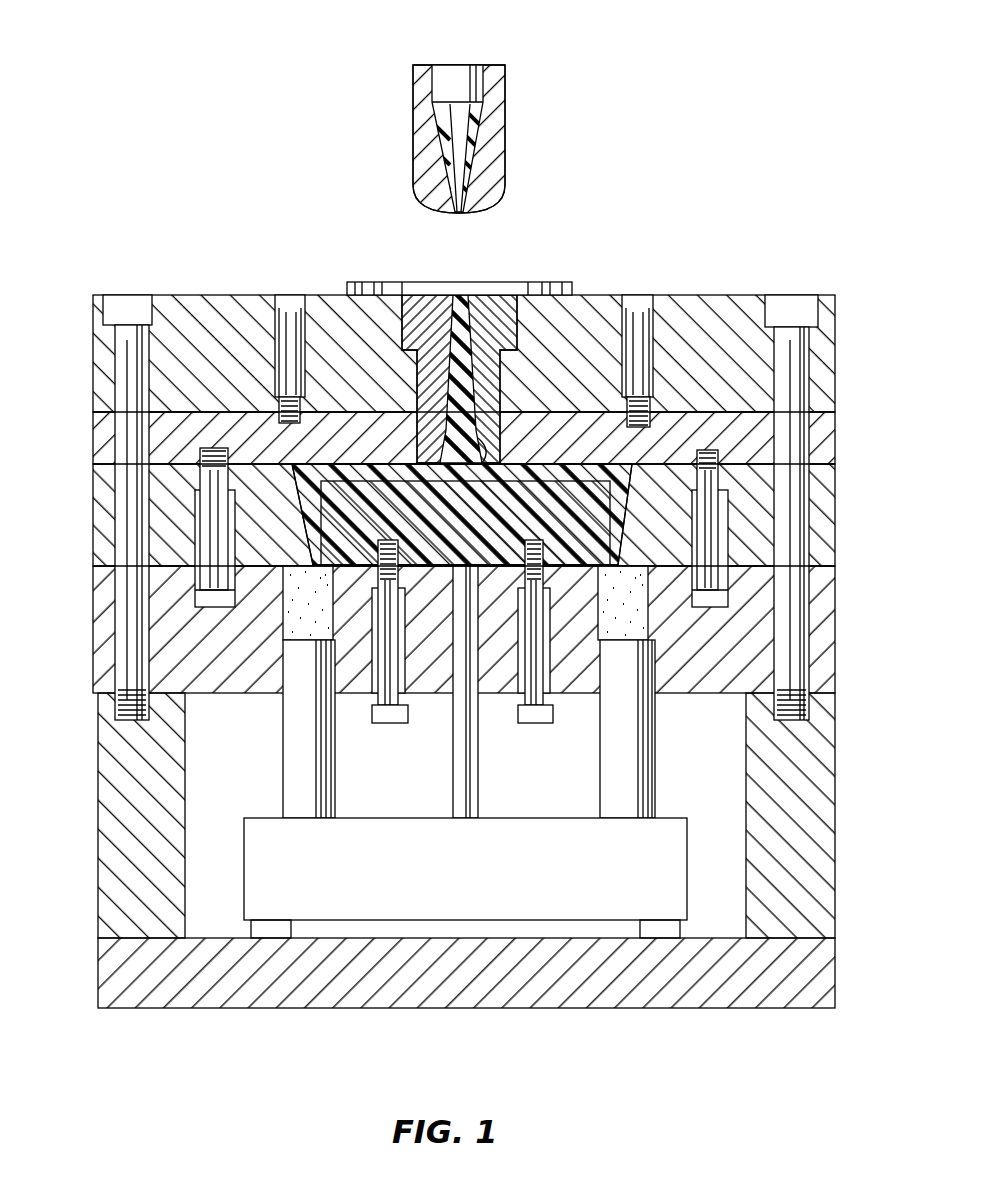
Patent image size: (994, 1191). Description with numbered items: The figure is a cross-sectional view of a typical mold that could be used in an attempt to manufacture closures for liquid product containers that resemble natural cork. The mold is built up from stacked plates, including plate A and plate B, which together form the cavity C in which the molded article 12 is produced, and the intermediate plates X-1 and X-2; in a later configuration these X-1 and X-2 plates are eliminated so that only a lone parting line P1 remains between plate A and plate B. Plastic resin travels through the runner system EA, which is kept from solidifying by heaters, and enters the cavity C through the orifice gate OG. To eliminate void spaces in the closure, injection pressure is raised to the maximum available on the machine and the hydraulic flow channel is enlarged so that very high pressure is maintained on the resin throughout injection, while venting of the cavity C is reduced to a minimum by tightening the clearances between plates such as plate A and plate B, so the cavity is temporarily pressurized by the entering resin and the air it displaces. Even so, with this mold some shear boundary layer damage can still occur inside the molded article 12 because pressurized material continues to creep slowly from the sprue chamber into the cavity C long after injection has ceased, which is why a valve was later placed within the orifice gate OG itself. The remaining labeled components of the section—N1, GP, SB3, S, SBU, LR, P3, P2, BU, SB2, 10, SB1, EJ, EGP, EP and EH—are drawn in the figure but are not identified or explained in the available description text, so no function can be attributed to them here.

The parting line P1 is at (458, 78).
The injection nozzle N1 is at (498, 142).
The guide pin GP is at (125, 300).
The socket bolt SB3 is at (287, 300).
The sprue S is at (458, 298).
The sprue bushing SBU is at (487, 302).
The locating ring LR is at (562, 286).
The plate A is at (824, 358).
The plate X-1 is at (824, 434).
The plate X-2 is at (824, 492).
The parting line P3 is at (78, 411).
The parting line P2 is at (80, 566).
The runner system EA is at (395, 470).
The sprue bushing bottom BU is at (482, 447).
The socket bolt SB2 is at (208, 570).
The orifice gate OG is at (313, 552).
The core insert 10 is at (592, 483).
The cavity C is at (650, 628).
The plate B is at (822, 663).
The molded article 12 is at (302, 640).
The socket bolt SB1 is at (390, 722).
The ejector pin EJ is at (638, 733).
The ejector guide pin EGP is at (477, 800).
The ejector plate EP is at (484, 882).
The ejector housing EH is at (810, 818).